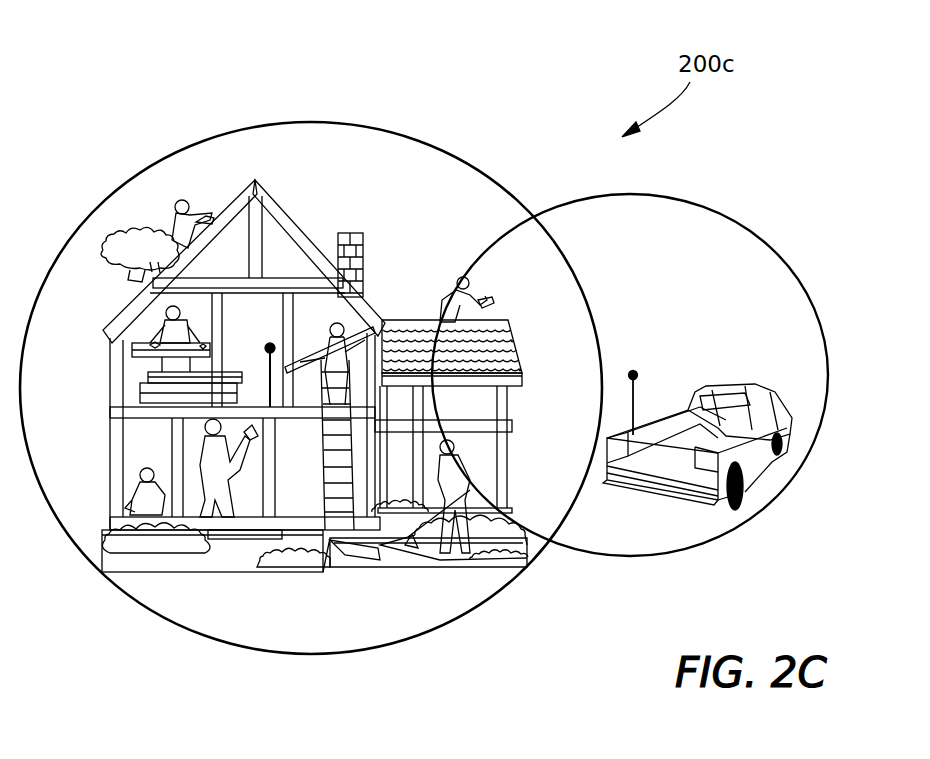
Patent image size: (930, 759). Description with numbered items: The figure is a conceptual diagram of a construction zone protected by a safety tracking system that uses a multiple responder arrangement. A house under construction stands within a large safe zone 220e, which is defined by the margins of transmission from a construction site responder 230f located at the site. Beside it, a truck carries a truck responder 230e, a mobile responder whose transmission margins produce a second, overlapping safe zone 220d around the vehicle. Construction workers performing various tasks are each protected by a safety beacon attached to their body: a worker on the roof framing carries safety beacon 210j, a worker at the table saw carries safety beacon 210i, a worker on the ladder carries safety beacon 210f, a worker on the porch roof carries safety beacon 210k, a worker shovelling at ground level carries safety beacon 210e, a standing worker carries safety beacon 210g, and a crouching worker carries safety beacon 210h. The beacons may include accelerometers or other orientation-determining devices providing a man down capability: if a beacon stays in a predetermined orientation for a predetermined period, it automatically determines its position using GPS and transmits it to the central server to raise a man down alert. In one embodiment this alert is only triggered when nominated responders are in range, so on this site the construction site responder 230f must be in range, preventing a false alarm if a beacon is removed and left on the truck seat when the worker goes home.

The safe zone 220e is at (283, 656).
The safe zone 220d is at (690, 554).
The construction site responder 230f is at (274, 344).
The truck responder 230e is at (635, 372).
The safety beacon 210j is at (148, 215).
The safety beacon 210i is at (158, 330).
The safety beacon 210f is at (338, 410).
The safety beacon 210k is at (441, 305).
The safety beacon 210e is at (520, 565).
The safety beacon 210g is at (198, 502).
The safety beacon 210h is at (140, 520).